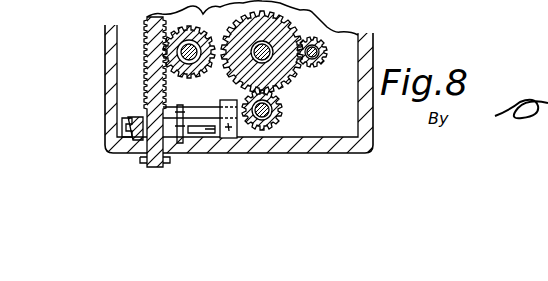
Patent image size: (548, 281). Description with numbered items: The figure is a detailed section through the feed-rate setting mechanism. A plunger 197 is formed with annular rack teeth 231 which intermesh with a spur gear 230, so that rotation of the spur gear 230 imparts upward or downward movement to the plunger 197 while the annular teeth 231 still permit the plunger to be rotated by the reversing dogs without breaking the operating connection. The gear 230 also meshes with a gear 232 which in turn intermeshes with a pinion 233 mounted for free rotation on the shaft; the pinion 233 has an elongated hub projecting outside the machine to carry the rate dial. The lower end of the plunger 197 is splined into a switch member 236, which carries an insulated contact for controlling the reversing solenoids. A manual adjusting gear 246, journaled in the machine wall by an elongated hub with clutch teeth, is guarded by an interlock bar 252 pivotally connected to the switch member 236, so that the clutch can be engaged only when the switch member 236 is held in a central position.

The plunger 197 is at (150, 19).
The spur gear 230 is at (174, 82).
The annular rack teeth 231 is at (155, 60).
The gear 232 is at (284, 32).
The pinion 233 is at (321, 38).
The switch member 236 is at (140, 155).
The gear 246 is at (277, 104).
The interlock bar 252 is at (203, 110).